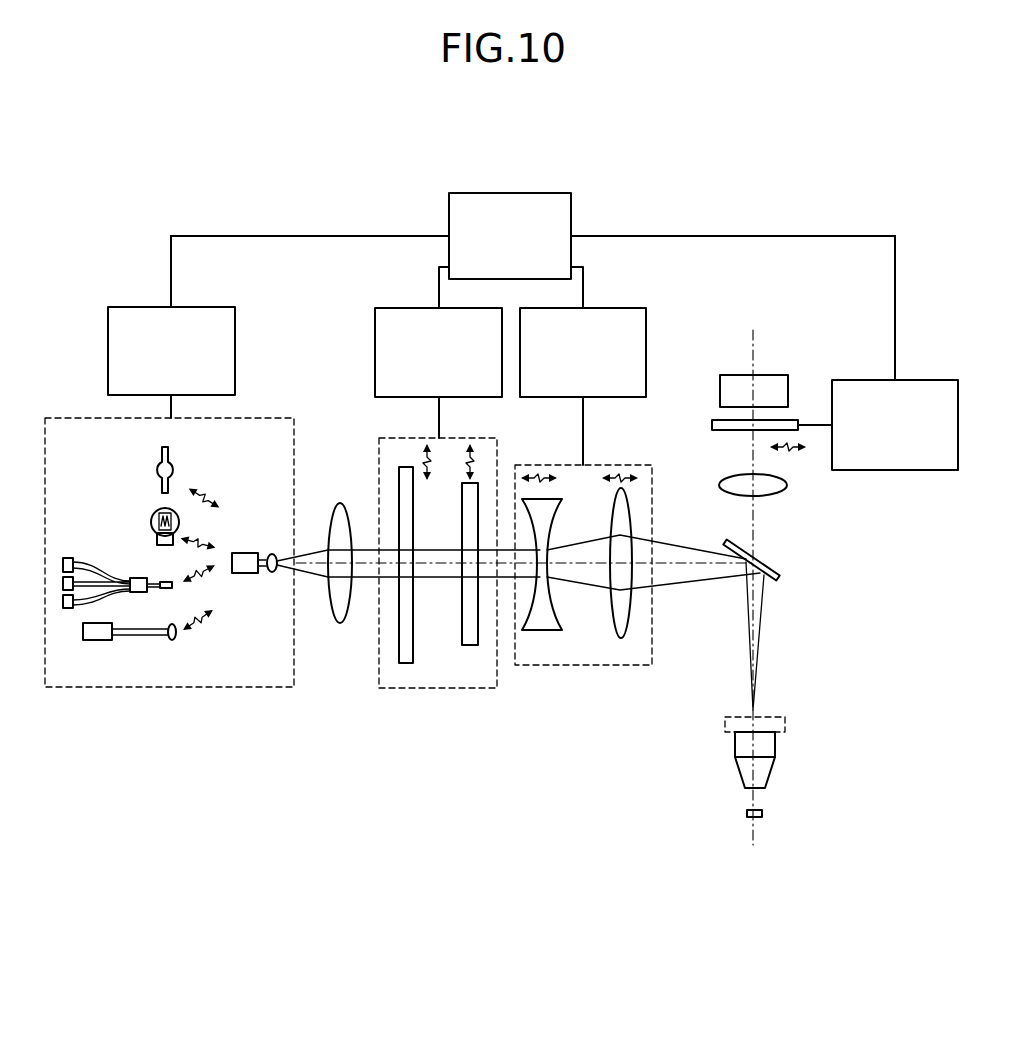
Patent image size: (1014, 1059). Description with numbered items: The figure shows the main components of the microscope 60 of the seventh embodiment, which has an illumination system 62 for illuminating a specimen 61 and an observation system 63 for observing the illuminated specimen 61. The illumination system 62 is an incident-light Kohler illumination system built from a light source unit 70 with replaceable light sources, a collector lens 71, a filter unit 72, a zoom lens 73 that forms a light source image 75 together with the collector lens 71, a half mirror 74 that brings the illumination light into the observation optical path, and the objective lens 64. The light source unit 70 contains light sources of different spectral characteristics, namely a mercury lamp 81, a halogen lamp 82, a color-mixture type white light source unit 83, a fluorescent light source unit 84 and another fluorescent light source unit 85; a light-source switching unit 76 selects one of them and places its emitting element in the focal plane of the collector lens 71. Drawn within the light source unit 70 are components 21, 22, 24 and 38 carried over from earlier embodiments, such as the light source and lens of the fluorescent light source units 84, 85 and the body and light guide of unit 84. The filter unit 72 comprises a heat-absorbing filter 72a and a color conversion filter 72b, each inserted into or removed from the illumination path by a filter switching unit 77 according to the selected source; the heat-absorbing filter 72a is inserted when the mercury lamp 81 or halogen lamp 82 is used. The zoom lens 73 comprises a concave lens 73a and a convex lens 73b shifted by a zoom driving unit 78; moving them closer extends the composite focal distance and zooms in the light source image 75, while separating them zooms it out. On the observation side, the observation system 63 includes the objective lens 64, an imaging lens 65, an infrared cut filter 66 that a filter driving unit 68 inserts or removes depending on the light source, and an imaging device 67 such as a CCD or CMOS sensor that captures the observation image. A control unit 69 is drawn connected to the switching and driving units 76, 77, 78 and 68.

The microscope 60 is at (583, 144).
The control unit 69 is at (540, 180).
The light-source switching unit 76 is at (198, 307).
The filter switching unit 77 is at (462, 308).
The zoom driving unit 78 is at (604, 308).
The light source unit 70 is at (256, 418).
The mercury lamp 81 is at (157, 468).
The halogen lamp 82 is at (151, 517).
The color-mixture type white light source unit 83 is at (126, 566).
The fluorescent light source unit 85 is at (254, 484).
The light source 21 is at (236, 552).
The lens 22 is at (272, 554).
The light source body 24 is at (93, 641).
The light guide 38 is at (152, 627).
The fluorescent light source unit 84 is at (133, 649).
The illumination system 62 is at (466, 780).
The collector lens 71 is at (340, 500).
The filter unit 72 is at (462, 438).
The heat-absorbing filter 72a is at (406, 665).
The color conversion filter 72b is at (470, 647).
The zoom lens 73 is at (603, 465).
The concave lens 73a is at (543, 632).
The convex lens 73b is at (622, 642).
The observation system 63 is at (708, 812).
The imaging device 67 is at (772, 375).
The infrared cut filter 66 is at (710, 425).
The filter driving unit 68 is at (924, 366).
The imaging lens 65 is at (788, 485).
The half mirror 74 is at (782, 577).
The light source image 75 is at (786, 726).
The objective lens 64 is at (778, 764).
The specimen 61 is at (764, 813).